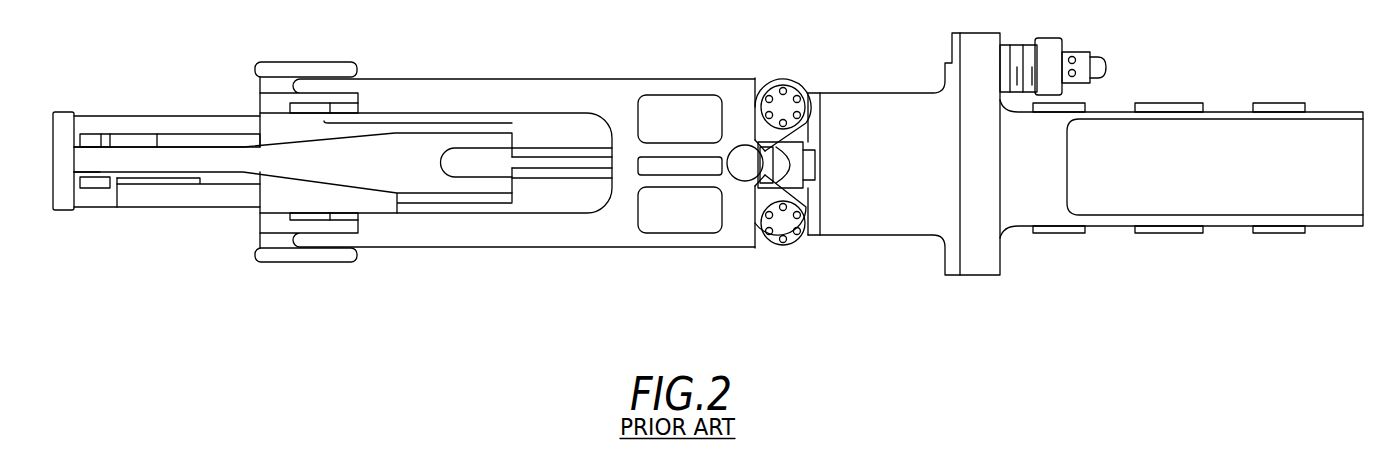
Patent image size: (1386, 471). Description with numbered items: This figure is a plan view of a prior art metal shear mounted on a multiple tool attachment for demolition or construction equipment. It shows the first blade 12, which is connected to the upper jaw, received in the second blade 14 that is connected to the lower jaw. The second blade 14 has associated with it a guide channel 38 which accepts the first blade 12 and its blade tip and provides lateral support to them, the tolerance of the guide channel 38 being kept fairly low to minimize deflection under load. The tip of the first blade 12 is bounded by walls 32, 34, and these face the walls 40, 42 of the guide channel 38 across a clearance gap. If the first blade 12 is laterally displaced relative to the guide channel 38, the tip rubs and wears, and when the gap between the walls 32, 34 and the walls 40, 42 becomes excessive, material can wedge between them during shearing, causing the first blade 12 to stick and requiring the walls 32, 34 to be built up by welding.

The first blade 12 is at (165, 158).
The second blade 14 is at (143, 184).
The wall 32 is at (100, 178).
The wall 34 is at (100, 146).
The guide channel 38 is at (185, 179).
The wall 40 is at (90, 167).
The wall 42 is at (90, 150).